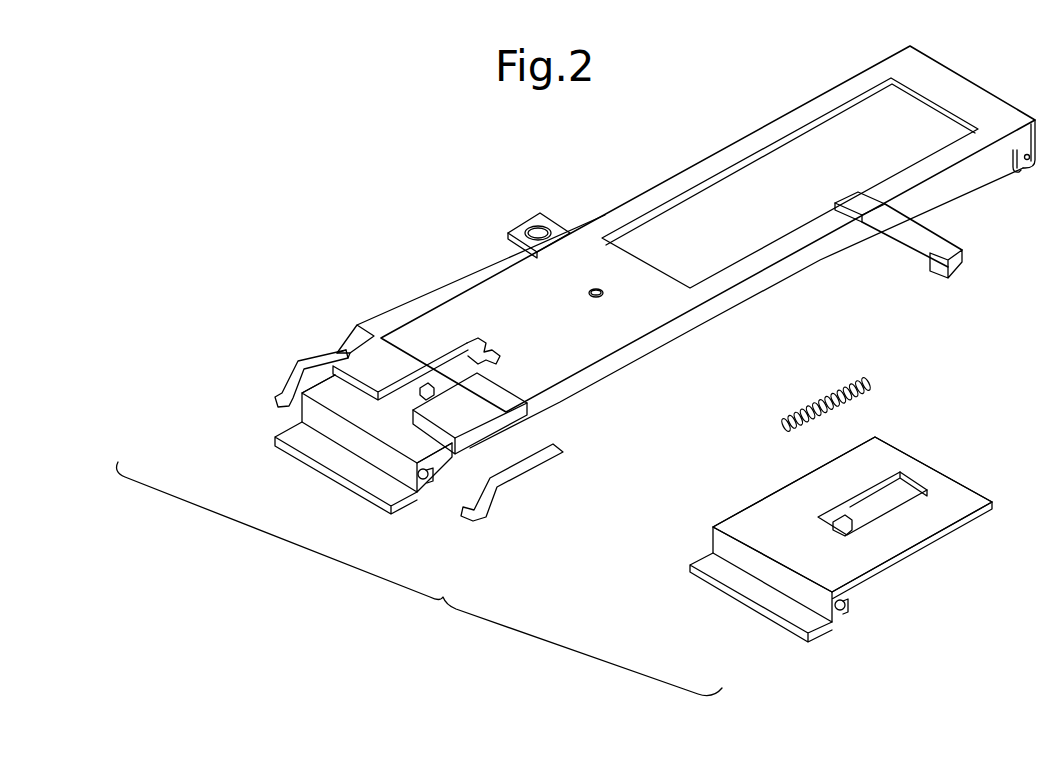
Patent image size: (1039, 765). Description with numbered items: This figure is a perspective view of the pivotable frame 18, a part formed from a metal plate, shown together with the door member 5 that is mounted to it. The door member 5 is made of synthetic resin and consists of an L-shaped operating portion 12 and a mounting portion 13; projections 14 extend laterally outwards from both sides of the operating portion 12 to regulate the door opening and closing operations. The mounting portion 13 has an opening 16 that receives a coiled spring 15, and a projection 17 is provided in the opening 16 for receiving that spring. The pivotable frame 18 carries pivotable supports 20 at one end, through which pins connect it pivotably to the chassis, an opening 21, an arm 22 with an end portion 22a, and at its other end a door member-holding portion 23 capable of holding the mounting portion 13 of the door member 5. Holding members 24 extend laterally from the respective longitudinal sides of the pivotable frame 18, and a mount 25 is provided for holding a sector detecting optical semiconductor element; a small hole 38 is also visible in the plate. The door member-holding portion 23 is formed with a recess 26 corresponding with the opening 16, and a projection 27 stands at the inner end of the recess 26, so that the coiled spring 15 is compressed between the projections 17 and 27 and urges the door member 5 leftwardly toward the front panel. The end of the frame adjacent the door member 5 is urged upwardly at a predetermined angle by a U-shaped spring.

The door member 5 is at (465, 546).
The operating portion 12 is at (372, 502).
The mounting portion 13 is at (432, 445).
The projections 14 is at (424, 482).
The coiled spring 15 is at (835, 394).
The opening 16 is at (918, 480).
The projection 17 is at (423, 388).
The pivotable frame 18 is at (650, 185).
The pivotable supports 20 is at (1012, 166).
The opening 21 is at (752, 178).
The arm 22 is at (934, 245).
The end piece of bracket arm 22a is at (936, 265).
The door member-holding portion 23 is at (417, 341).
The holding members 24 is at (310, 358).
The mount 25 is at (532, 225).
The recess 26 is at (492, 380).
The projection 27 is at (490, 352).
The hole 38 is at (598, 311).